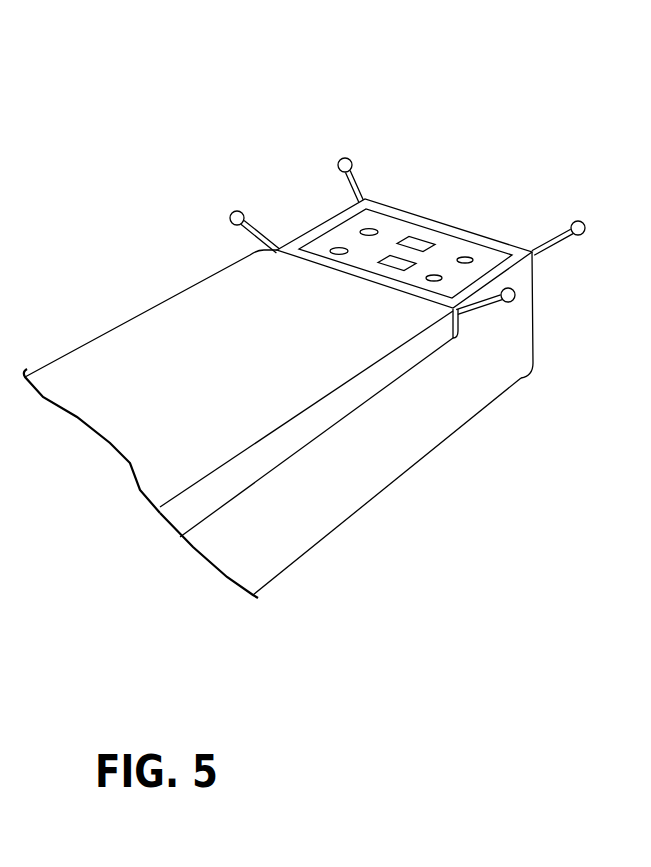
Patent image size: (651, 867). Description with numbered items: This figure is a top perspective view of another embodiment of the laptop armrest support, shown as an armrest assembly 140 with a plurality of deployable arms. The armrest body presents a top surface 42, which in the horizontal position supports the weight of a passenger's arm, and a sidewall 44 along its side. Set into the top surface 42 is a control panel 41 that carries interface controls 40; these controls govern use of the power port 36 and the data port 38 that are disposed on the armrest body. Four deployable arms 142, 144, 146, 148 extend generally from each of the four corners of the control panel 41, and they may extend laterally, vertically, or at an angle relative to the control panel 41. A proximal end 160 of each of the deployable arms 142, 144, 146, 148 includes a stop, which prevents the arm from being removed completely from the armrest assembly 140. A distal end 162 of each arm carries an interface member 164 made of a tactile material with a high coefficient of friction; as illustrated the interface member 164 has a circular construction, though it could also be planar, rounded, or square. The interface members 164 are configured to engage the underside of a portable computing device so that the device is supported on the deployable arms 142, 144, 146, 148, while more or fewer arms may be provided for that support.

The power port 36 is at (362, 229).
The data port 38 is at (337, 247).
The interface controls 40 is at (394, 260).
The control panel 41 is at (523, 180).
The top surface 42 is at (174, 408).
The sidewall 44 is at (328, 496).
The armrest assembly 140 is at (178, 152).
The deployable arm 142 is at (252, 241).
The deployable arm 144 is at (364, 192).
The deployable arm 146 is at (556, 245).
The deployable arm 148 is at (527, 371).
The proximal end 160 is at (365, 200).
The distal end 162 is at (247, 212).
The interface member 164 is at (230, 213).